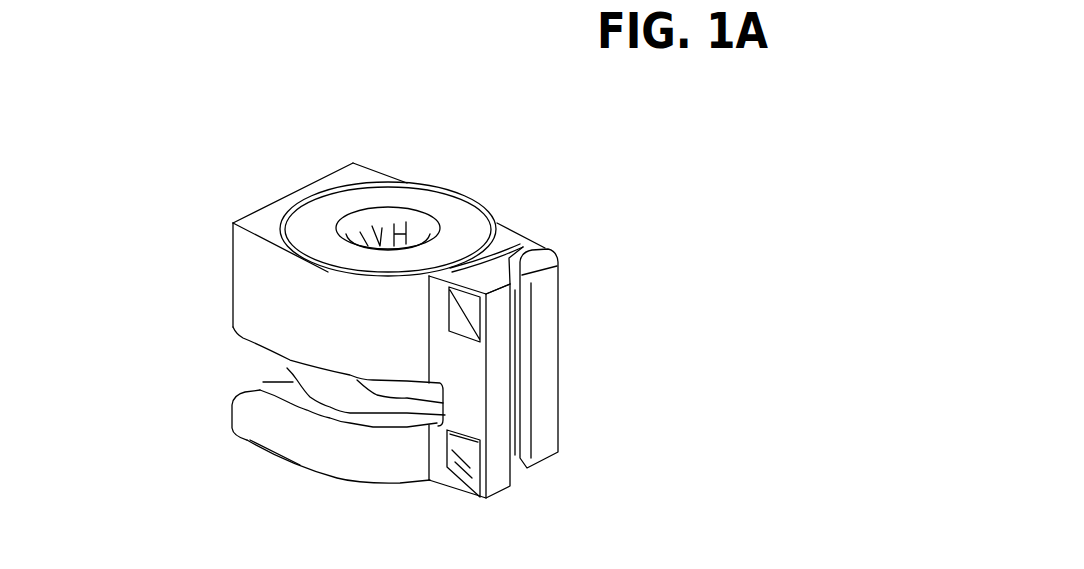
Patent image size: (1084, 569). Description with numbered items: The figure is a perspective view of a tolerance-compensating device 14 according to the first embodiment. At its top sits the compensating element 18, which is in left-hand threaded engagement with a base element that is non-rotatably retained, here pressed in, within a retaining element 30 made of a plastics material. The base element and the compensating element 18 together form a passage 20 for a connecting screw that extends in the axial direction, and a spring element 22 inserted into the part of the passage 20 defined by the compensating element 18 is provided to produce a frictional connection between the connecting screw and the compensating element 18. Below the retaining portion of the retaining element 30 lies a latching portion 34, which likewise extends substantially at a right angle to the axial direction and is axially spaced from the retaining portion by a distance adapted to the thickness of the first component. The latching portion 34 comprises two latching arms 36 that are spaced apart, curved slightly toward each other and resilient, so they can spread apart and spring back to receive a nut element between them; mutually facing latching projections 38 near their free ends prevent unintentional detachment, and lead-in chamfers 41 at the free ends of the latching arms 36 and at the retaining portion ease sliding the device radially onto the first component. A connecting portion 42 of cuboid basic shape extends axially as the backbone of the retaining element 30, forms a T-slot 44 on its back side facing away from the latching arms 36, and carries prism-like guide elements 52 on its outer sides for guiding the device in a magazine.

The tolerance-compensating device 14 is at (233, 147).
The compensating element 18 is at (325, 215).
The passage 20 is at (384, 232).
The spring element 22 is at (402, 232).
The retaining element 30 is at (276, 295).
The latching portion 34 is at (247, 437).
The latching arms 36 is at (300, 445).
The latching projections 38 is at (290, 368).
The lead-in chamfers 41 is at (237, 337).
The connecting portion 42 is at (557, 349).
The T-slot 44 is at (503, 260).
The guide elements 52 is at (460, 480).